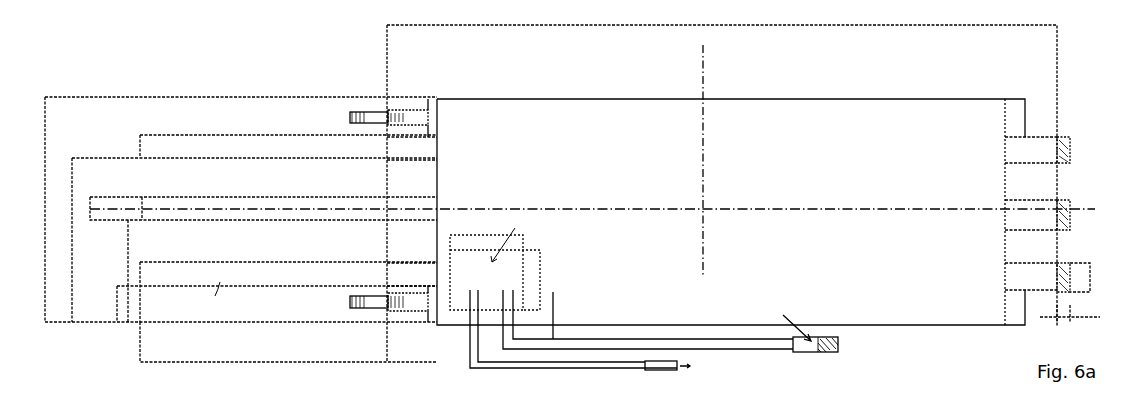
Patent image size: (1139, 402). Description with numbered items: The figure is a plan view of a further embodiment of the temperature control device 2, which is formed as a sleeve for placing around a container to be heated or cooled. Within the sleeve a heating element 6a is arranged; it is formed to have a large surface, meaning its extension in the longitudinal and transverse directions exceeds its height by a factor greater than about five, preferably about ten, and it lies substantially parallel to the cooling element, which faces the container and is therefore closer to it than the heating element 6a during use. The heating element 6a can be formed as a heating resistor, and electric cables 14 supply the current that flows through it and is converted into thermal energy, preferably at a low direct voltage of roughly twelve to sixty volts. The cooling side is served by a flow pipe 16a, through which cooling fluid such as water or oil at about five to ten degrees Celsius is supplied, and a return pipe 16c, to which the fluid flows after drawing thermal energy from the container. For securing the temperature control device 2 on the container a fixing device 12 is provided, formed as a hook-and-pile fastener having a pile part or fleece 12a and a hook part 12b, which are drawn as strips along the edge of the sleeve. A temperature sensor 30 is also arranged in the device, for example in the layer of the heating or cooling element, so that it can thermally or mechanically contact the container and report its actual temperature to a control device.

The temperature control device 2 is at (482, 86).
The heating element 6a is at (870, 176).
The fixing device 12 is at (343, 159).
The pile part 12a is at (401, 262).
The hook part 12b is at (274, 271).
The electric cables 14 is at (683, 346).
The flow pipe 16a is at (349, 116).
The return pipe 16c is at (352, 300).
The temperature sensor 30 is at (495, 265).